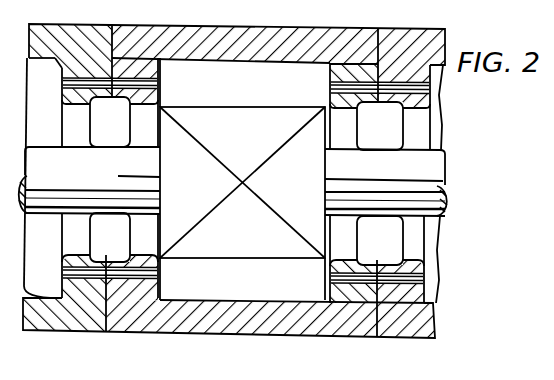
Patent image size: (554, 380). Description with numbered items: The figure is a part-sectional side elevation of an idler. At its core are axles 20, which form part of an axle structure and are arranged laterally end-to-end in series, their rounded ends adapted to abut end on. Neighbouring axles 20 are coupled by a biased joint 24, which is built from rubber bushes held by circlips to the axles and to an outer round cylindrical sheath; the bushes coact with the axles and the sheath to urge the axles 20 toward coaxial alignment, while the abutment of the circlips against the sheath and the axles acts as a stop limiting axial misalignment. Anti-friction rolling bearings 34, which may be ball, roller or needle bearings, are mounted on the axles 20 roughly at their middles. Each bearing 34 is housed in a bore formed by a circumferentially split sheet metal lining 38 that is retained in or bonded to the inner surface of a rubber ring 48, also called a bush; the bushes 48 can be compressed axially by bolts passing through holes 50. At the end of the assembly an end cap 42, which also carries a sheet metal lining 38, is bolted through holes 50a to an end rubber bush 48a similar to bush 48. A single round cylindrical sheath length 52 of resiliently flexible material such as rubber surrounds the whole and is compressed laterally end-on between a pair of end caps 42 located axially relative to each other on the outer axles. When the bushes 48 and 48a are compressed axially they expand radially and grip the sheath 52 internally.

The axles 20 is at (105, 175).
The biased joint 24 is at (283, 105).
The anti-friction rolling bearing 34 is at (118, 134).
The sheet metal lining 38 is at (403, 110).
The end cap 42 is at (87, 50).
The rubber ring 48 is at (328, 292).
The end rubber bush 48a is at (157, 292).
The holes 50 is at (428, 90).
The holes 50a is at (167, 85).
The cylindrical sheath length 52 is at (250, 330).